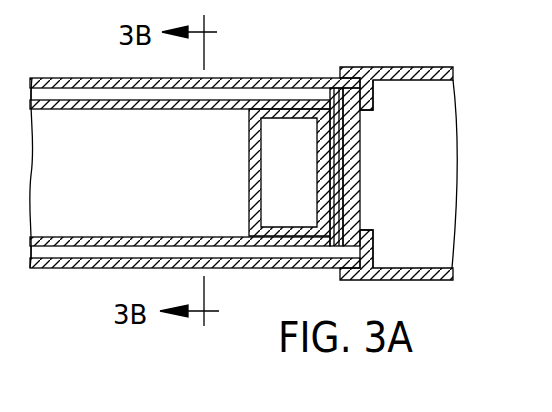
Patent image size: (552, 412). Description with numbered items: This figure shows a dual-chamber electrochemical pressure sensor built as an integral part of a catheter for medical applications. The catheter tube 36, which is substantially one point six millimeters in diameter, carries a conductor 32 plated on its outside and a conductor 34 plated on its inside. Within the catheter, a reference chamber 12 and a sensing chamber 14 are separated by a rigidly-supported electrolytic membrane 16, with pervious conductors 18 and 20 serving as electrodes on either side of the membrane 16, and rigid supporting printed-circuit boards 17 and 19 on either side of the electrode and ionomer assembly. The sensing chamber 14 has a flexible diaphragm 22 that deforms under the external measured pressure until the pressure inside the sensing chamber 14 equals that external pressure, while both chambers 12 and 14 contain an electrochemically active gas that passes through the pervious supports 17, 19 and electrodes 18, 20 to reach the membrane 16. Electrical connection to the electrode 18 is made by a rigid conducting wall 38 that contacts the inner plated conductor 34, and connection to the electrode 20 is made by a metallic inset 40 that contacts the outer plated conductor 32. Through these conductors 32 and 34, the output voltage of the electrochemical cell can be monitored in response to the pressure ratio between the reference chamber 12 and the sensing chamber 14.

The reference chamber 12 is at (305, 201).
The sensing chamber 14 is at (420, 201).
The electrolytic membrane 16 is at (337, 100).
The rigid supporting printed-circuit board 17 is at (302, 229).
The pervious conductor 18 is at (318, 136).
The rigid supporting printed-circuit board 19 is at (363, 213).
The pervious conductor 20 is at (360, 135).
The flexible diaphragm 22 is at (458, 166).
The outer plated conductor 32 is at (227, 78).
The inner plated conductor 34 is at (185, 110).
The catheter tube 36 is at (50, 90).
The rigid conducting wall 38 is at (249, 170).
The metallic inset 40 is at (373, 107).